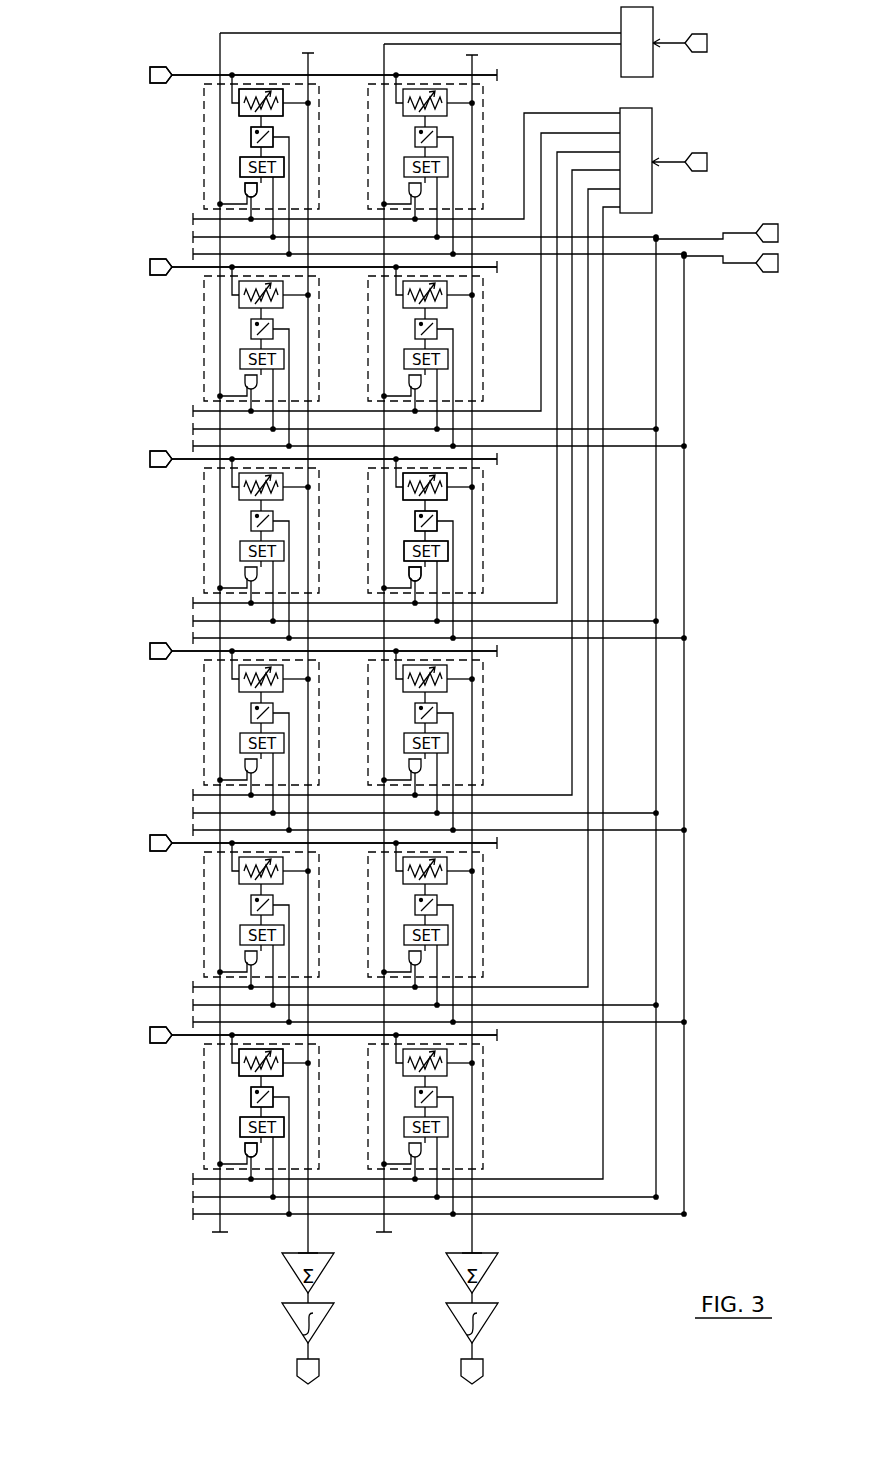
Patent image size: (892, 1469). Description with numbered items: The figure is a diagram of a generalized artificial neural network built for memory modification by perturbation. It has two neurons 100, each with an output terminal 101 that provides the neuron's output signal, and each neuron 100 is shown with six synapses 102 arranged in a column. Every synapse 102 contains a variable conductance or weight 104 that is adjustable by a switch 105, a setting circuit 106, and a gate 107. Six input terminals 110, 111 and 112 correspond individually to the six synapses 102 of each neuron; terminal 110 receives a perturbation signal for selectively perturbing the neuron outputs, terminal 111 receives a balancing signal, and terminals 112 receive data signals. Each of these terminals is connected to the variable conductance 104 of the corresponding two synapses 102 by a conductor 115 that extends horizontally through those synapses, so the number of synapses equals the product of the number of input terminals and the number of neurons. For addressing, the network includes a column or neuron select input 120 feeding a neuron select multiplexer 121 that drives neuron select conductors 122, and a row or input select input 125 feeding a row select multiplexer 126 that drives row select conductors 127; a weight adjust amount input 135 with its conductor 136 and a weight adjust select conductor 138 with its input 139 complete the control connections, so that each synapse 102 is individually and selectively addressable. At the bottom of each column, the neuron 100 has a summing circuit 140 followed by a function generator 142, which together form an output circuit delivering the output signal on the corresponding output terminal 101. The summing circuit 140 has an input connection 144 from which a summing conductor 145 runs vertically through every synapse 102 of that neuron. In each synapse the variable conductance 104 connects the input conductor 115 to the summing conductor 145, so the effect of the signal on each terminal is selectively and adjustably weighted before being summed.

The neuron 100 is at (280, 28).
The output terminal 101 is at (296, 1365).
The synapse 102 is at (367, 154).
The variable conductance 104 is at (240, 112).
The switch 105 is at (251, 137).
The setting circuit 106 is at (240, 165).
The gate 107 is at (245, 192).
The input terminal 110 is at (152, 68).
The input terminal 111 is at (152, 270).
The input terminal 112 is at (150, 465).
The conductor 115 is at (196, 72).
The neuron select input 120 is at (707, 43).
The neuron select multiplexer 121 is at (654, 63).
The neuron select conductor 122 is at (224, 38).
The row select input 125 is at (702, 154).
The row select multiplexer 126 is at (652, 197).
The row select conductor 127 is at (603, 233).
The weight adjust amount input 135 is at (778, 232).
The weight adjust amount conductor 136 is at (638, 239).
The weight adjust select conductor 138 is at (205, 248).
The weight adjust select input 139 is at (778, 264).
The summing circuit 140 is at (284, 1265).
The function generator 142 is at (287, 1322).
The input connection 144 is at (304, 1252).
The summing conductor 145 is at (308, 186).